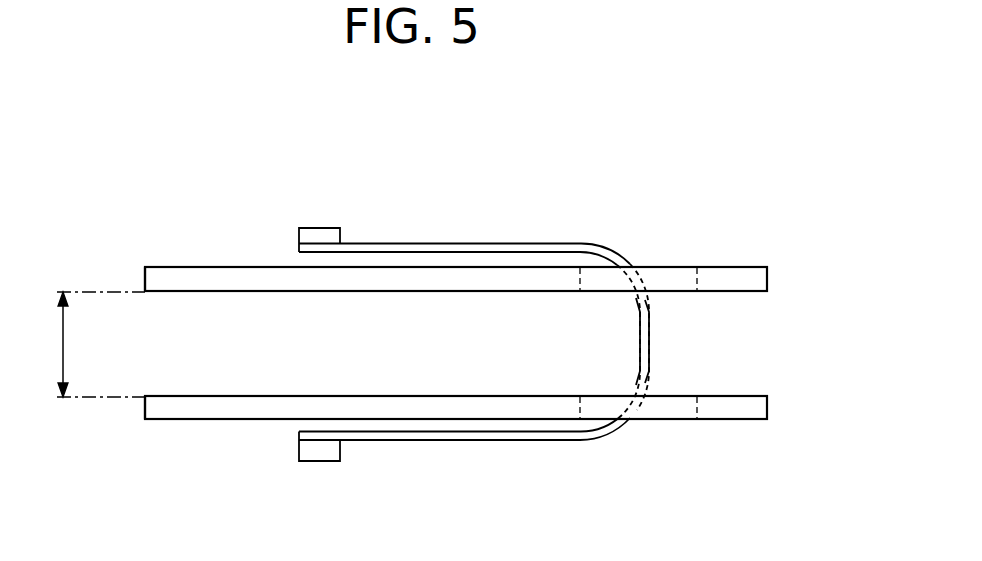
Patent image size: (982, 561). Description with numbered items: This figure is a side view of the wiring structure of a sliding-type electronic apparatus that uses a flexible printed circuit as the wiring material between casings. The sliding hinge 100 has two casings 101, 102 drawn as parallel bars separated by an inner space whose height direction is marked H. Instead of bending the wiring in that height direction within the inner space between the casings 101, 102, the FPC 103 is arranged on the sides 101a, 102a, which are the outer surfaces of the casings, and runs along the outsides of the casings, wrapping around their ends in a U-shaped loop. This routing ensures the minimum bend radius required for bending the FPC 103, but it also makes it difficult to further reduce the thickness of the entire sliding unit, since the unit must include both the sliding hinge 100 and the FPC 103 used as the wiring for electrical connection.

The sliding hinge 100 is at (140, 194).
The casing 101 is at (753, 277).
The casing 102 is at (753, 407).
The side of casing 101a is at (217, 267).
The side of casing 102a is at (217, 421).
The FPC 103 is at (458, 243).